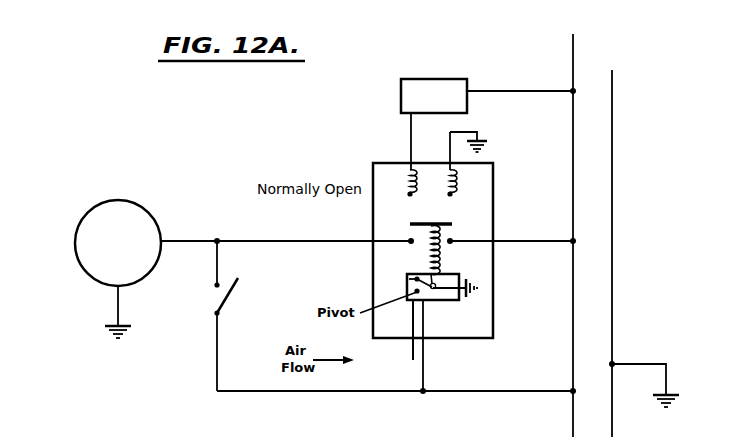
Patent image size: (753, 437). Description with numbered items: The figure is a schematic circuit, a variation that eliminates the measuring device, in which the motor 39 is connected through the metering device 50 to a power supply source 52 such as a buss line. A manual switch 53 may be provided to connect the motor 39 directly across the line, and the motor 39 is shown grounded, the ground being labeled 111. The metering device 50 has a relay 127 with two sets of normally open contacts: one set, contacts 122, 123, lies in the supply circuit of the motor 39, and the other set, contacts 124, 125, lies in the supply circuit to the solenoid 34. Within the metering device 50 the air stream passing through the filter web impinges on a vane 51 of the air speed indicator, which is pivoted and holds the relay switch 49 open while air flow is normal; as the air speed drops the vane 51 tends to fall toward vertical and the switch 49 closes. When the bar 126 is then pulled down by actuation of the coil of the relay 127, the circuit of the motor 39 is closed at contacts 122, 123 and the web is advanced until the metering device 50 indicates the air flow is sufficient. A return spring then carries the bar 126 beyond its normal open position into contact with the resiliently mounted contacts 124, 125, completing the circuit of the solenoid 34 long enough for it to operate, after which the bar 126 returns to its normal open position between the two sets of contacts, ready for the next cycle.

The solenoid 34 is at (437, 85).
The motor 39 is at (102, 270).
The relay switch 49 is at (417, 280).
The metering device 50 is at (483, 310).
The vane 51 is at (410, 349).
The power supply source 52 is at (612, 341).
The switch 53 is at (233, 288).
The ground 111 is at (73, 352).
The contact 122 is at (411, 245).
The contact 123 is at (450, 245).
The contact 124 is at (410, 194).
The contact 125 is at (450, 196).
The bar 126 is at (423, 222).
The relay 127 is at (438, 234).